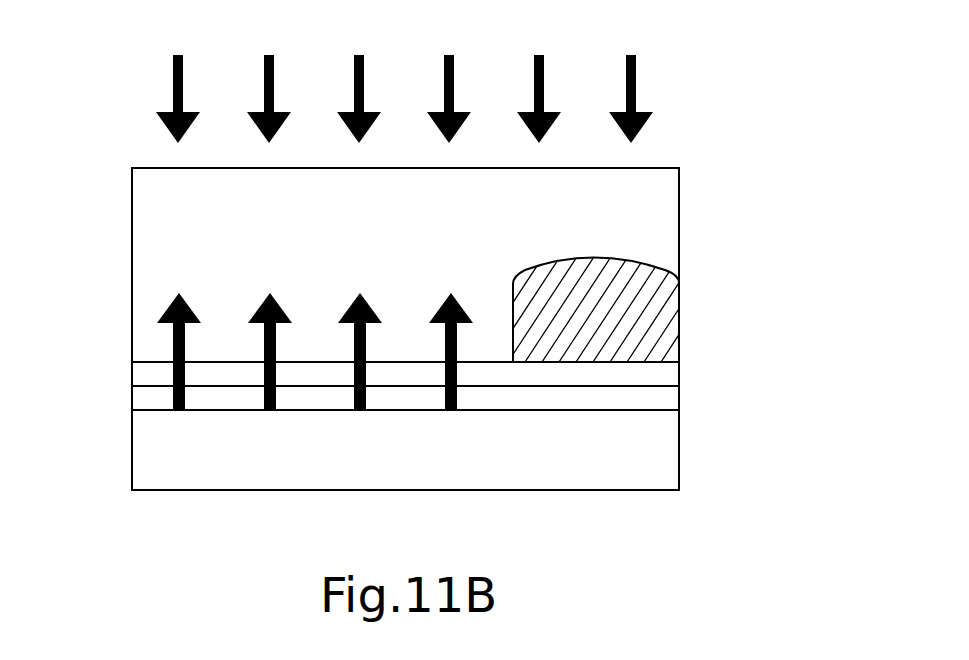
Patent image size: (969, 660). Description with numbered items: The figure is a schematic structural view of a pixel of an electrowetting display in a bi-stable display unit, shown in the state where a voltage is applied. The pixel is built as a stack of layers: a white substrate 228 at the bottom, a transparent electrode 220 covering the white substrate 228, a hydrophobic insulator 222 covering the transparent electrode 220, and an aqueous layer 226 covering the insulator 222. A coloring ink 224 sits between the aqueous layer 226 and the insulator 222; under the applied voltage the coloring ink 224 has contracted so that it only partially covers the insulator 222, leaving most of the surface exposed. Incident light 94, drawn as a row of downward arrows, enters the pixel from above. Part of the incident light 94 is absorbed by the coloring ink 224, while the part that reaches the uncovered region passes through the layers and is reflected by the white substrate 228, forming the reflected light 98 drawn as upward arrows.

The incident light 94 is at (636, 93).
The reflected light 98 is at (172, 343).
The transparent electrode 220 is at (145, 398).
The insulator 222 is at (145, 377).
The coloring ink 224 is at (657, 322).
The aqueous layer 226 is at (145, 219).
The white substrate 228 is at (145, 450).